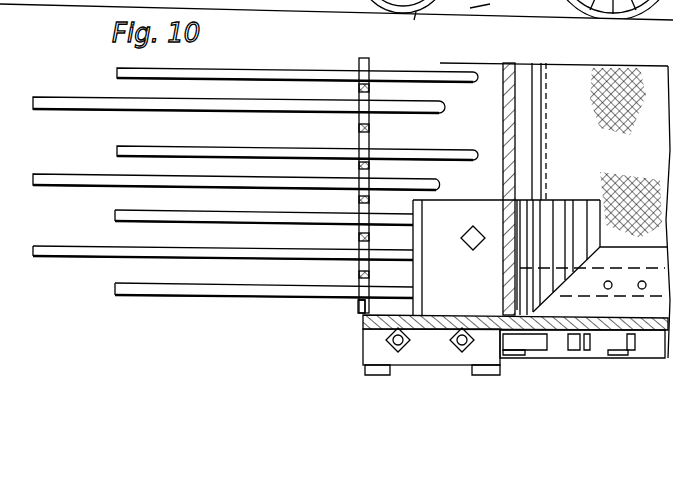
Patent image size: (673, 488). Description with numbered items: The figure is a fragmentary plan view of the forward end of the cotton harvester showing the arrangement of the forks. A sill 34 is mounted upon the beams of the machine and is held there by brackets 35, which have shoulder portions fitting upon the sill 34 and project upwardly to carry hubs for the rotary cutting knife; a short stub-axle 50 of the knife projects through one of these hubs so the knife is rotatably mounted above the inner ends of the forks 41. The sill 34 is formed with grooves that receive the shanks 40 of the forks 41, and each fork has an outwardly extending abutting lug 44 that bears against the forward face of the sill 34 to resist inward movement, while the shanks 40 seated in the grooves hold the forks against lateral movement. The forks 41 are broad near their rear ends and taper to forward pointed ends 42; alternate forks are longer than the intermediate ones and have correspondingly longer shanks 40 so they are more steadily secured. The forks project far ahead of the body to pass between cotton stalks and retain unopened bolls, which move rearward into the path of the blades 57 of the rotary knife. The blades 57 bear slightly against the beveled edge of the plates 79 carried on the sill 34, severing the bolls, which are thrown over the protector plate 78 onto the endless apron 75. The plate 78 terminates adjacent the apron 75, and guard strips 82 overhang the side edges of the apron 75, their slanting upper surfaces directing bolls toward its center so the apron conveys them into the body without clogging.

The sill 34 is at (490, 80).
The brackets 35 is at (468, 305).
The shanks 40 is at (383, 82).
The forks 41 is at (172, 160).
The forward pointed ends 42 is at (95, 79).
The abutting lug 44 is at (362, 166).
The stub-axle 50 is at (400, 300).
The blades 57 is at (460, 336).
The endless apron 75 is at (637, 67).
The protector plate 78 is at (566, 206).
The plates 79 is at (470, 206).
The guard strips 82 is at (640, 251).